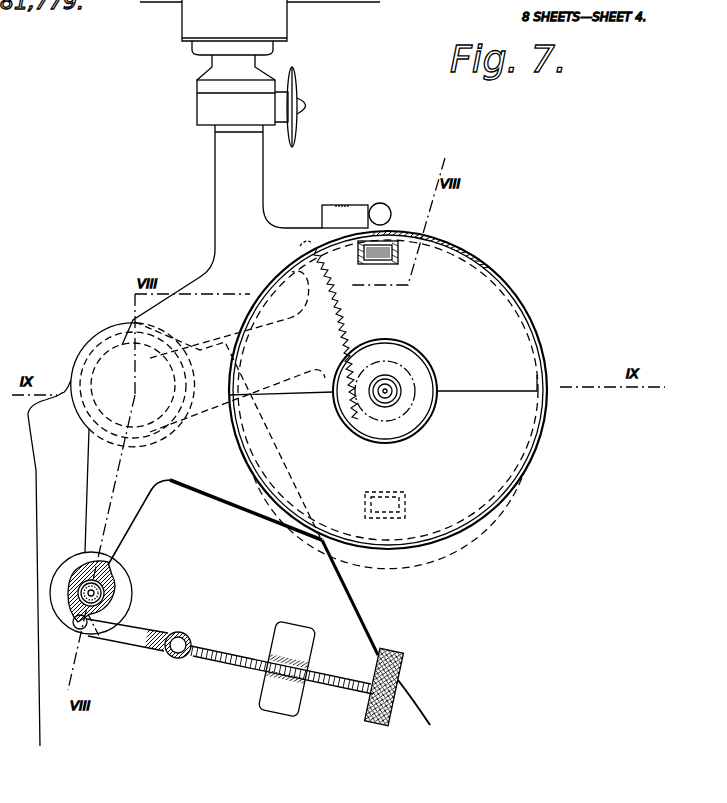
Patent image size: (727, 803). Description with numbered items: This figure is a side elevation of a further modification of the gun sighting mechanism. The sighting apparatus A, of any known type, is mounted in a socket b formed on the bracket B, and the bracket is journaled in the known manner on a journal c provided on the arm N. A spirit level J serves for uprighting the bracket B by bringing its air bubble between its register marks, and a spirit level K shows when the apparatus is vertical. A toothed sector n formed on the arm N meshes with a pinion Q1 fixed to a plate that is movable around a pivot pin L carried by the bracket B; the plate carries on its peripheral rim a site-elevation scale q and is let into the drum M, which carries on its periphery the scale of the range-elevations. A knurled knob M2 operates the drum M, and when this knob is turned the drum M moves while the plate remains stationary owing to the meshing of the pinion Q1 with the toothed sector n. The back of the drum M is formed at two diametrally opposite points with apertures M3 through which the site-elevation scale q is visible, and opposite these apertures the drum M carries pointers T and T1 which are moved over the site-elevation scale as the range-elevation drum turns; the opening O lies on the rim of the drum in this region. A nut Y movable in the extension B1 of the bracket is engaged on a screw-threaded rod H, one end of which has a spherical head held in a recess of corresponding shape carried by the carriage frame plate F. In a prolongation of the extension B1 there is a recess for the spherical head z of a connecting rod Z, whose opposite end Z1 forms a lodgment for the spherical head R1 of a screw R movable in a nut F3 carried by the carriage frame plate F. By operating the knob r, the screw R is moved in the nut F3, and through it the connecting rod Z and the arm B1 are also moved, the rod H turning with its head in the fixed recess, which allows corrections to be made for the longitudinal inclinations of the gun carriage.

The sighting apparatus A is at (205, 105).
The socket b is at (222, 160).
The spirit level K is at (327, 210).
The spirit level J is at (384, 208).
The opening in rim O is at (421, 246).
The bracket B is at (541, 461).
The drum M is at (505, 331).
The knurled knob M2 is at (416, 360).
The apertures M3 is at (424, 494).
The pinion Q1 is at (362, 366).
The pivot pin L is at (384, 400).
The toothed sector n is at (342, 307).
The site-elevation scale q is at (358, 252).
The pointer T is at (391, 256).
The pointer T1 is at (386, 513).
The arm N is at (265, 324).
The journal c is at (98, 420).
The screw-threaded rod H is at (68, 595).
The nut Y is at (108, 591).
The extension B1 is at (128, 512).
The carriage frame plate F is at (347, 612).
The spherical head z is at (72, 636).
The connecting rod Z is at (125, 636).
The spherical head R1 is at (182, 637).
The end of connecting rod Z1 is at (173, 663).
The screw R is at (238, 656).
The nut F3 is at (277, 677).
The knob r is at (372, 727).